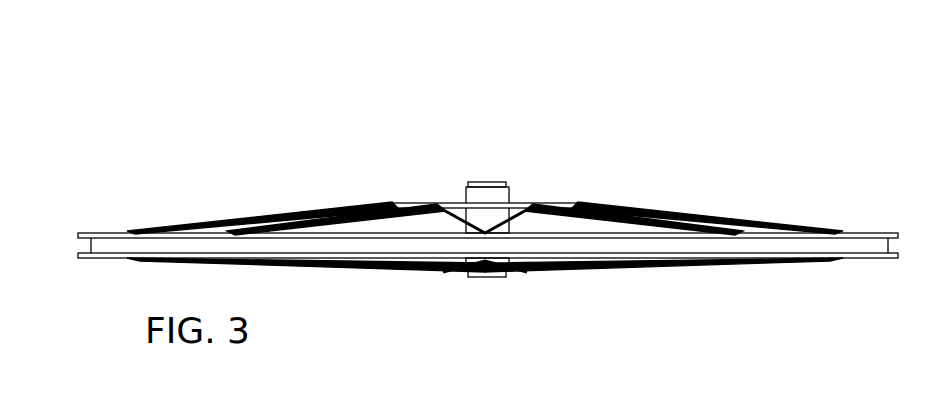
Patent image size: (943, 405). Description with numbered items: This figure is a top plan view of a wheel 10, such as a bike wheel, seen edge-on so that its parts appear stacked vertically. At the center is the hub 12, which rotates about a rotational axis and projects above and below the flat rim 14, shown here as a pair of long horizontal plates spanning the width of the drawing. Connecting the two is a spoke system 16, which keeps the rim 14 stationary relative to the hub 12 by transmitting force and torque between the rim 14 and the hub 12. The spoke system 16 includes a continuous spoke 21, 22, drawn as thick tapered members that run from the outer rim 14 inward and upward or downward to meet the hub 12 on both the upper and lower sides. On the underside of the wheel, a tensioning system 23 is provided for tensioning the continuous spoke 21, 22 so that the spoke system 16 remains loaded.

The wheel 10 is at (368, 121).
The hub 12 is at (510, 198).
The rim 14 is at (90, 258).
The spoke system 16 is at (274, 196).
The continuous spoke 21 is at (342, 272).
The continuous spoke 22 is at (343, 207).
The tensioning system 23 is at (540, 299).